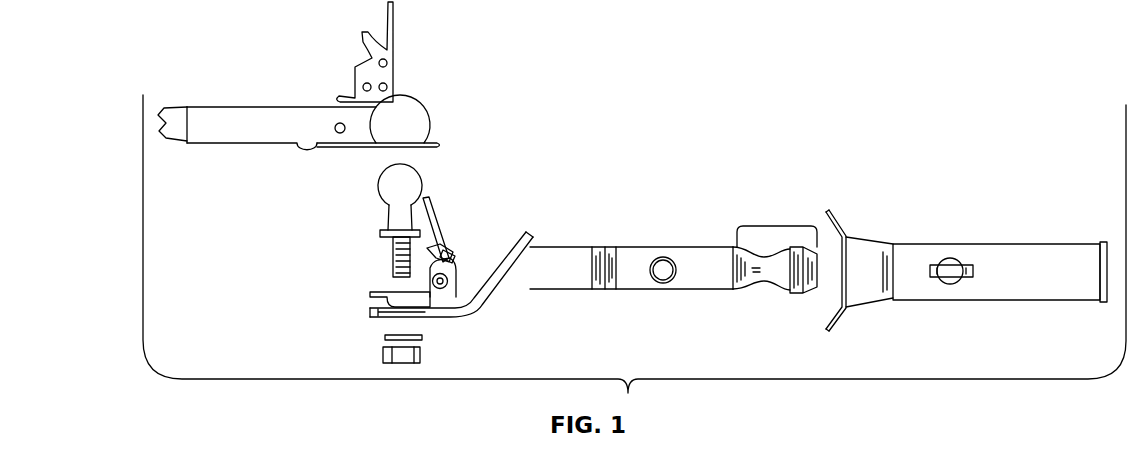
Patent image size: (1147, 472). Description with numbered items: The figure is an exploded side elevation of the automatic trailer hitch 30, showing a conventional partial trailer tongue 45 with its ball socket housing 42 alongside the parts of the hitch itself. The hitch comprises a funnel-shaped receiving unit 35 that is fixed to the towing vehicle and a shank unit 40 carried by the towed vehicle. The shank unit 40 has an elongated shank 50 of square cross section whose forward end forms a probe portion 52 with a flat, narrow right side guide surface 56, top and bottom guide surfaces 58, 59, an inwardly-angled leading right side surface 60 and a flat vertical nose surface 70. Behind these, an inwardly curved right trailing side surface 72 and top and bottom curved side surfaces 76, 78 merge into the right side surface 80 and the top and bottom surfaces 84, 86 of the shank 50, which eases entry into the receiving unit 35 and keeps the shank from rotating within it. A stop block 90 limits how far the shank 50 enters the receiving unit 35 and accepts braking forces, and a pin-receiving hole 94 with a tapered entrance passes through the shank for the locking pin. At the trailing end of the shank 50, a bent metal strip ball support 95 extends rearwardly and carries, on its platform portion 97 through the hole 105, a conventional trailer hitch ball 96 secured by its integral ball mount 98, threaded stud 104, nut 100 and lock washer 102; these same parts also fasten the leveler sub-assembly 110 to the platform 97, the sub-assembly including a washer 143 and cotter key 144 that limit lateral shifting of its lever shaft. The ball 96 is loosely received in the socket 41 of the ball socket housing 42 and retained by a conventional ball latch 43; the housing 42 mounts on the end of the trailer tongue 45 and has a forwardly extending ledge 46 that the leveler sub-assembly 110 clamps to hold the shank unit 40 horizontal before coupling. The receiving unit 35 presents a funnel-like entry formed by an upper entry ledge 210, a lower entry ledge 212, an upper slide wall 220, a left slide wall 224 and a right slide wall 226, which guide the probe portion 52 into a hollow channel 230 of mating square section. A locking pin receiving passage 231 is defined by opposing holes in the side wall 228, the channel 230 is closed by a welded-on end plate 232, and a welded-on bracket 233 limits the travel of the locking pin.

The automatic trailer hitch 30 is at (683, 185).
The receiving unit 35 is at (962, 272).
The shank unit 40 is at (686, 259).
The socket 41 is at (405, 100).
The ball socket housing 42 is at (323, 96).
The ball latch 43 is at (390, 47).
The trailer tongue 45 is at (170, 135).
The forwardly extending ledge 46 is at (433, 142).
The shank 50 is at (632, 247).
The probe portion 52 is at (777, 226).
The right side guide surface 56 is at (797, 285).
The top guide surface 58 is at (802, 258).
The bottom guide surface 59 is at (793, 290).
The right side surface 60 is at (808, 292).
The nose surface 70 is at (820, 277).
The right trailing side surface 72 is at (755, 270).
The top curved side surface 76 is at (768, 256).
The bottom curved side surface 78 is at (760, 285).
The right side surface 80 is at (687, 277).
The top surface 84 is at (705, 247).
The bottom surface 86 is at (645, 293).
The stop block 90 is at (614, 292).
The pin-receiving hole 94 is at (663, 285).
The ball support 95 is at (427, 302).
The trailer hitch ball 96 is at (395, 214).
The platform portion 97 is at (463, 316).
The ball mount 98 is at (390, 214).
The nut 100 is at (422, 355).
The lock washer 102 is at (383, 338).
The threaded stud 104 is at (393, 262).
The hole 105 is at (397, 316).
The leveler sub-assembly 110 is at (468, 244).
The washer 143 is at (452, 277).
The cotter key 144 is at (447, 283).
The upper entry ledge 210 is at (842, 213).
The lower entry ledge 212 is at (836, 323).
The upper slide wall 220 is at (872, 238).
The left slide wall 224 is at (872, 303).
The right slide wall 226 is at (875, 283).
The side wall 228 is at (1057, 270).
The hollow channel 230 is at (1023, 302).
The locking pin receiving passage 231 is at (960, 260).
The end plate 232 is at (1105, 246).
The bracket 233 is at (963, 280).